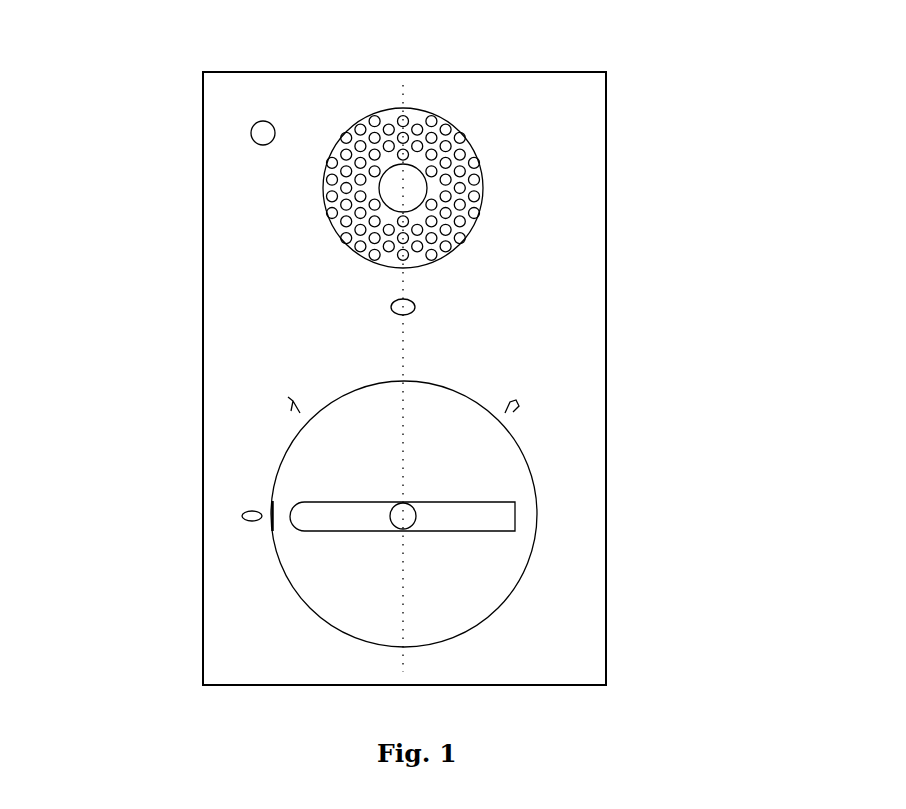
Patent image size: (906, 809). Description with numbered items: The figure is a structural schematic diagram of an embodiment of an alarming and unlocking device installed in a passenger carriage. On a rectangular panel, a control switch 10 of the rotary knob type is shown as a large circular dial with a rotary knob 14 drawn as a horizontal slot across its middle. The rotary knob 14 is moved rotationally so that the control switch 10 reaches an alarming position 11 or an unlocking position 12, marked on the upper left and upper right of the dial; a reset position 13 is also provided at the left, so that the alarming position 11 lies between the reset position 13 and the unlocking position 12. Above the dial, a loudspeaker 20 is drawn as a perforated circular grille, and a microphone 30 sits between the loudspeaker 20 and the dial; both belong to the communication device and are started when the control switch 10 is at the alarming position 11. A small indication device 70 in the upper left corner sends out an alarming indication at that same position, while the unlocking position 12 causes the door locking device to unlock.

The control switch 10 is at (277, 565).
The alarming position 11 is at (287, 415).
The unlocking position 12 is at (517, 420).
The reset position 13 is at (225, 513).
The rotary knob 14 is at (472, 512).
The loudspeaker 20 is at (440, 113).
The microphone 30 is at (391, 307).
The indication device 70 is at (251, 136).